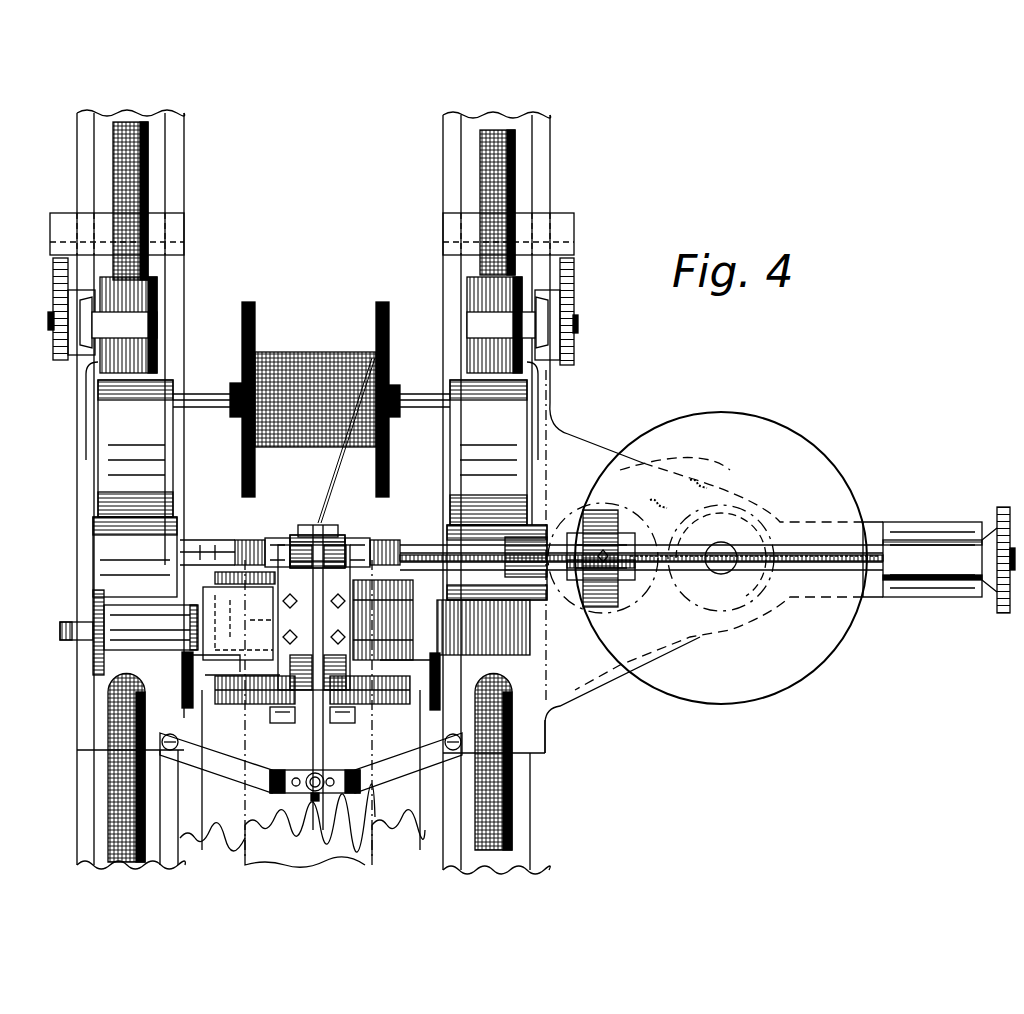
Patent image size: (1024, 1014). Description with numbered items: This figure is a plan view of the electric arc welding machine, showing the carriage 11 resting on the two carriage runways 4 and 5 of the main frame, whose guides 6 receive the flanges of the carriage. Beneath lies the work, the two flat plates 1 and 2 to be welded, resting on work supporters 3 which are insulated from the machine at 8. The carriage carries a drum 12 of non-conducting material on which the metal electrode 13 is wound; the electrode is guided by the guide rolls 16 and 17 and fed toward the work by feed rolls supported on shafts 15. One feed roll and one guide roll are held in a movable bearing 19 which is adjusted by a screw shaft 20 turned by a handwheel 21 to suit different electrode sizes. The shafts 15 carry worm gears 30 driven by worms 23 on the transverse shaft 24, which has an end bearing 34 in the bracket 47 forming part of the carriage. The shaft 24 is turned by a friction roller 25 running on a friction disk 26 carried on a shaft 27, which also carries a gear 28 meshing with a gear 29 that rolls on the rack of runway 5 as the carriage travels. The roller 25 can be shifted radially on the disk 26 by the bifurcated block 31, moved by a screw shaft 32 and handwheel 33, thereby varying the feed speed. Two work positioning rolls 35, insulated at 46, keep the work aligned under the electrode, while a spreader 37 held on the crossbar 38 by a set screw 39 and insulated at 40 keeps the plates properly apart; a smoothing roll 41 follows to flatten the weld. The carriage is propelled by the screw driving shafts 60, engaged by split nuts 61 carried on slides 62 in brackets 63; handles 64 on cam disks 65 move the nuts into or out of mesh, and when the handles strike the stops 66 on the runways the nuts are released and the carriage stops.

The flat plate 1 is at (218, 832).
The flat plate 2 is at (410, 830).
The work supporter 3 is at (310, 713).
The carriage runway 4 is at (78, 406).
The carriage runway 5 is at (540, 770).
The guide 6 is at (165, 120).
The insulation 8 is at (182, 690).
The carriage 11 is at (548, 637).
The drum 12 is at (384, 302).
The metal electrode 13 is at (305, 368).
The shaft 15 is at (264, 538).
The guide roll 16 is at (230, 705).
The guide roll 17 is at (322, 668).
The movable bearing 19 is at (200, 552).
The screw shaft 20 is at (65, 625).
The handwheel 21 is at (96, 592).
The worm 23 is at (243, 538).
The transverse shaft 24 is at (436, 556).
The friction roller 25 is at (605, 516).
The friction disk 26 is at (721, 558).
The shaft 27 is at (721, 575).
The gear 28 is at (715, 510).
The gear 29 is at (645, 502).
The worm gear 30 is at (285, 540).
The bifurcated block 31 is at (612, 578).
The screw shaft 32 is at (838, 552).
The handwheel 33 is at (997, 605).
The end bearing 34 is at (905, 525).
The work positioning roll 35 is at (311, 731).
The spreader 37 is at (298, 785).
The crossbar 38 is at (234, 770).
The set screw 39 is at (318, 795).
The insulation 40 is at (360, 775).
The follower or smoothing roll 41 is at (338, 538).
The insulation 46 is at (240, 708).
The bracket 47 is at (598, 445).
The carriage driving shaft 60 is at (113, 137).
The split nut 61 is at (313, 325).
The slide 62 is at (86, 335).
The bracket 63 is at (88, 378).
The handle 64 is at (55, 275).
The cam disk 65 is at (52, 306).
The stop 66 is at (168, 232).